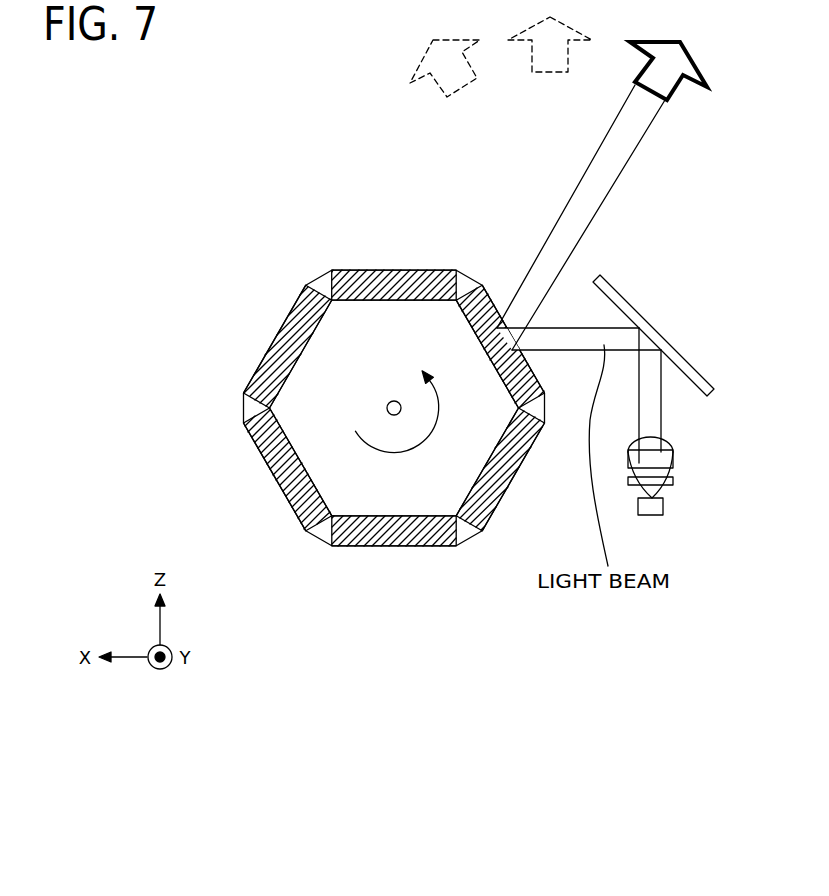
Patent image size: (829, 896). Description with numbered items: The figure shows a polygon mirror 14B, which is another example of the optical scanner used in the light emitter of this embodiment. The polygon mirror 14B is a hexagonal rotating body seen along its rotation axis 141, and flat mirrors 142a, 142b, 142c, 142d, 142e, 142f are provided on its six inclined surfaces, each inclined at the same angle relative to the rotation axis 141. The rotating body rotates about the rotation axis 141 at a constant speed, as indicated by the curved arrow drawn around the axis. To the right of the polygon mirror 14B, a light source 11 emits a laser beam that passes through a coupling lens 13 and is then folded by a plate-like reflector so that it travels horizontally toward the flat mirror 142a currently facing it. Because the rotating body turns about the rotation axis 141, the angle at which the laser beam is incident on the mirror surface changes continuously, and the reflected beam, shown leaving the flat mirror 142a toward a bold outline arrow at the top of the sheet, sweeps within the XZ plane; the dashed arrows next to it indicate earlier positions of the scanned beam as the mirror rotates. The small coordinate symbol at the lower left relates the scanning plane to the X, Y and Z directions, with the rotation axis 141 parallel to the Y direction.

The polygon mirror 14B is at (267, 63).
The flat mirror 142a is at (480, 290).
The flat mirror 142b is at (497, 485).
The flat mirror 142c is at (393, 547).
The flat mirror 142d is at (278, 480).
The flat mirror 142e is at (278, 340).
The flat mirror 142f is at (400, 268).
The rotation axis 141 is at (387, 409).
The coupling lens 13 is at (675, 460).
The light source 11 is at (664, 507).